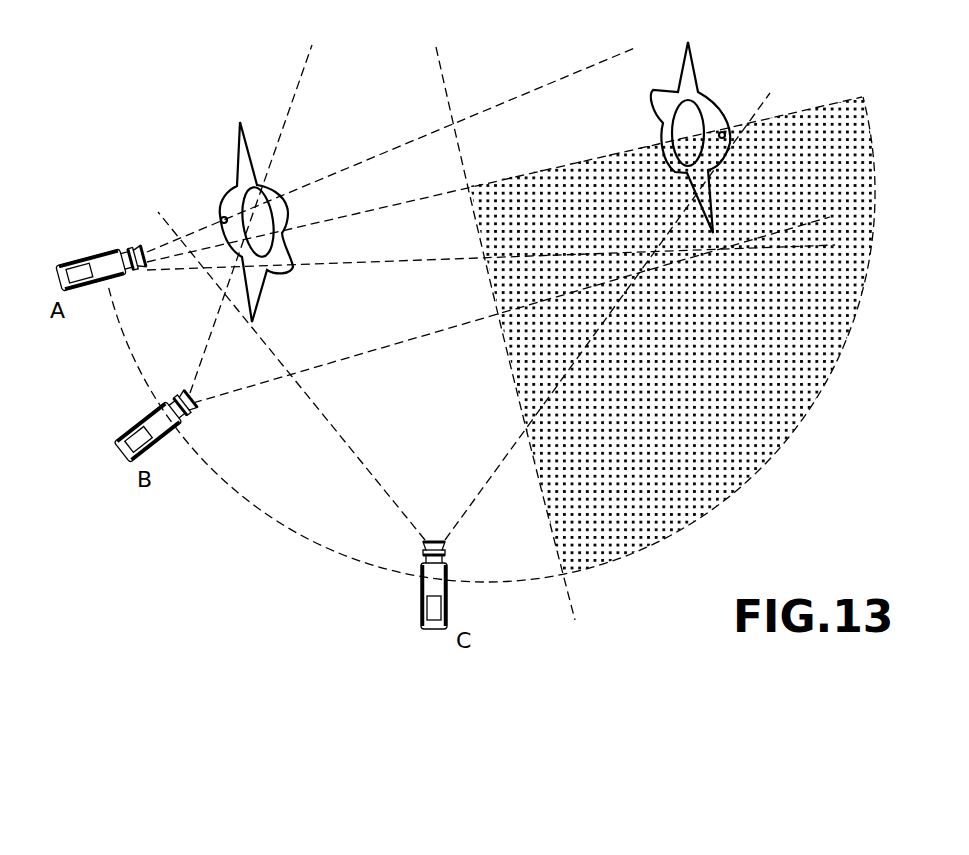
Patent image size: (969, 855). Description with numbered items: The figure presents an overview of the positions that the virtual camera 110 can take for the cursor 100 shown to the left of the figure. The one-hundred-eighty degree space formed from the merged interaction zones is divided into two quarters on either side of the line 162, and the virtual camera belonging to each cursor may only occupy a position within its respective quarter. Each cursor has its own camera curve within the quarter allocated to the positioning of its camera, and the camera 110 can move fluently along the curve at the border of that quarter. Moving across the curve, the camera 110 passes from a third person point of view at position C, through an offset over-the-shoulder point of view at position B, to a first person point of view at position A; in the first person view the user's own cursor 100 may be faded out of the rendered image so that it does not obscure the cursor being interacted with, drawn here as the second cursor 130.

The cursor 100 is at (238, 140).
The camera 110 is at (68, 262).
The second fish (subject) 130 is at (690, 58).
The line 162 is at (548, 540).